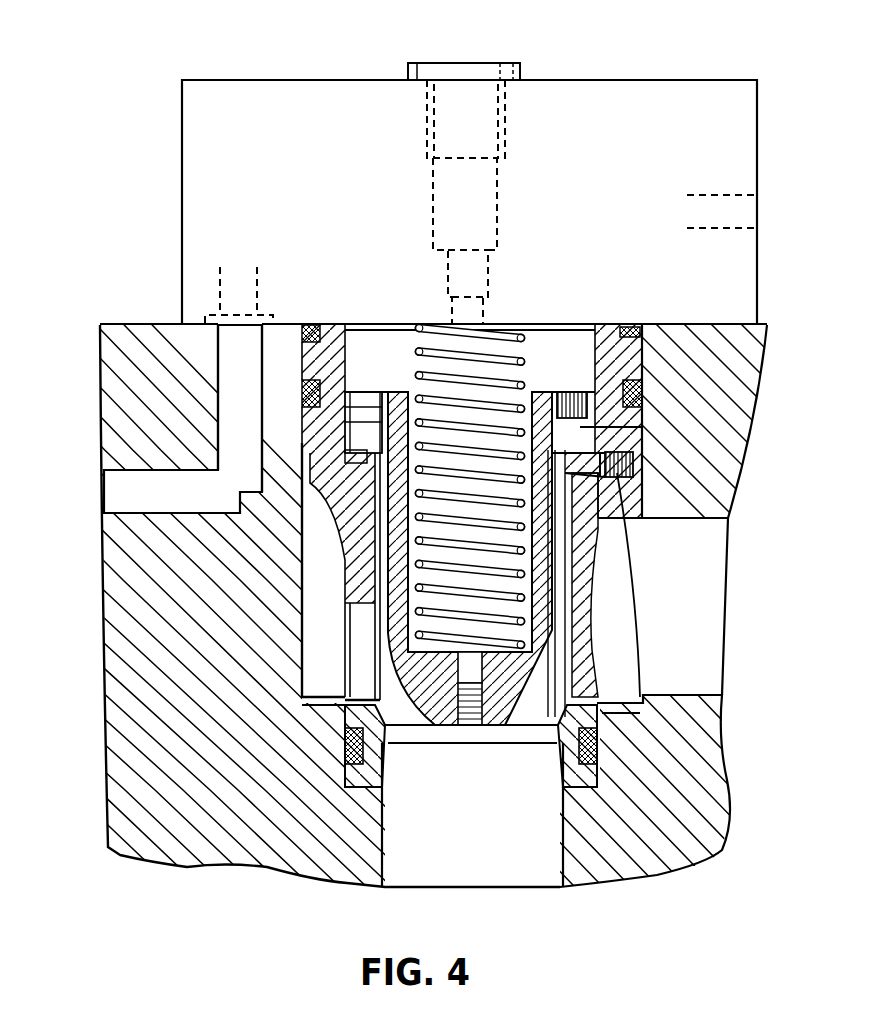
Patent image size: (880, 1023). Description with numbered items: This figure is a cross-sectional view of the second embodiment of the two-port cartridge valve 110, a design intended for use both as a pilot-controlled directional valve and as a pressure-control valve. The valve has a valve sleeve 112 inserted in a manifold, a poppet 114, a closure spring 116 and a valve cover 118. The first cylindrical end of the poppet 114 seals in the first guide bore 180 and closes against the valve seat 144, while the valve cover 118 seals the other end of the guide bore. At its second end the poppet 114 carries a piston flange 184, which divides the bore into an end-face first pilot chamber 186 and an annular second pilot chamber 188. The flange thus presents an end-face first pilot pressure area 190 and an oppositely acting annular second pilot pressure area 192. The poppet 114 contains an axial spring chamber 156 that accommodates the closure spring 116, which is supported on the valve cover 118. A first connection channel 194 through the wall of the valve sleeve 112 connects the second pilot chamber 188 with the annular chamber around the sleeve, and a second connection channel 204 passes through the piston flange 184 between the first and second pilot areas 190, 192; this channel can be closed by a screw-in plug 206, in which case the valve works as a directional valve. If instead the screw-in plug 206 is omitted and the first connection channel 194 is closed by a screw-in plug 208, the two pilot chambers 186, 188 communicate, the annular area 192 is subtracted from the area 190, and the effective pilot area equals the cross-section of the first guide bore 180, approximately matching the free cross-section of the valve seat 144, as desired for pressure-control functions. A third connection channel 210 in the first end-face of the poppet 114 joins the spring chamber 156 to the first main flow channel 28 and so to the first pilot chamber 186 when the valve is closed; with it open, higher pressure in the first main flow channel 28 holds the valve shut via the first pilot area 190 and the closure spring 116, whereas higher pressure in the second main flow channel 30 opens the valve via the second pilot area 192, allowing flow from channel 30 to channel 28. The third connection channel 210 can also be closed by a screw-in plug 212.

The two-port valve 110 is at (118, 93).
The valve cover 118 is at (232, 105).
The valve sleeve 112 is at (310, 445).
The poppet 114 is at (602, 715).
The second pilot chamber 188 is at (356, 463).
The screw-in plug 206 is at (573, 387).
The second connection channel 204 is at (643, 428).
The screw-in plug 208 is at (633, 464).
The closure spring 116 is at (408, 378).
The piston flange 184 is at (373, 413).
The first pilot pressure area 190 is at (545, 393).
The first connection channel 194 is at (600, 478).
The first guide bore 180 is at (573, 560).
The second pilot pressure area 192 is at (355, 468).
The spring chamber 156 is at (433, 553).
The first pilot chamber 186 is at (470, 368).
The third connection channel 210 is at (468, 667).
The screw-in plug 212 is at (560, 692).
The valve seat 144 is at (372, 688).
The second main flow channel 30 is at (665, 674).
The first main flow channel 28 is at (527, 858).